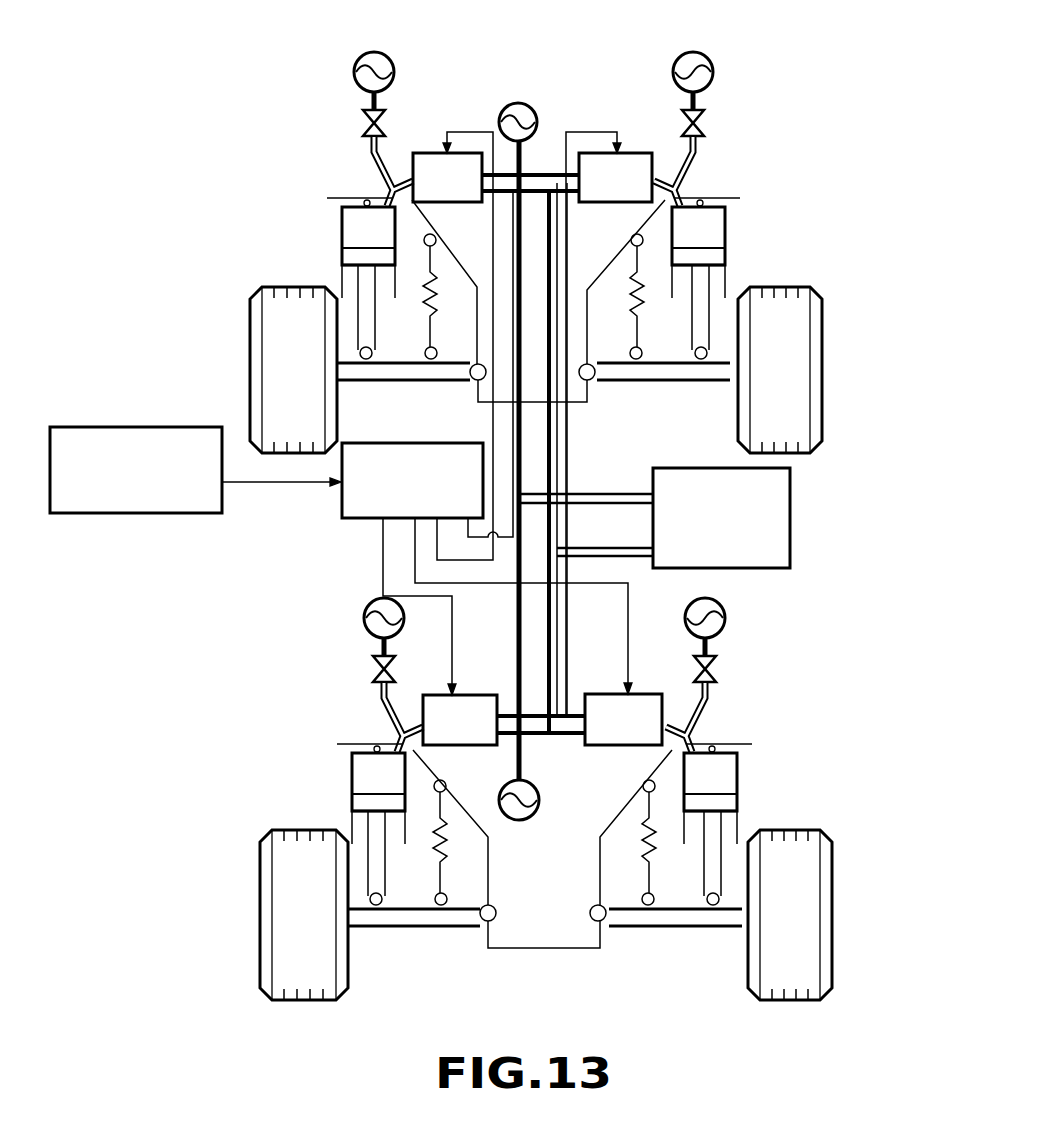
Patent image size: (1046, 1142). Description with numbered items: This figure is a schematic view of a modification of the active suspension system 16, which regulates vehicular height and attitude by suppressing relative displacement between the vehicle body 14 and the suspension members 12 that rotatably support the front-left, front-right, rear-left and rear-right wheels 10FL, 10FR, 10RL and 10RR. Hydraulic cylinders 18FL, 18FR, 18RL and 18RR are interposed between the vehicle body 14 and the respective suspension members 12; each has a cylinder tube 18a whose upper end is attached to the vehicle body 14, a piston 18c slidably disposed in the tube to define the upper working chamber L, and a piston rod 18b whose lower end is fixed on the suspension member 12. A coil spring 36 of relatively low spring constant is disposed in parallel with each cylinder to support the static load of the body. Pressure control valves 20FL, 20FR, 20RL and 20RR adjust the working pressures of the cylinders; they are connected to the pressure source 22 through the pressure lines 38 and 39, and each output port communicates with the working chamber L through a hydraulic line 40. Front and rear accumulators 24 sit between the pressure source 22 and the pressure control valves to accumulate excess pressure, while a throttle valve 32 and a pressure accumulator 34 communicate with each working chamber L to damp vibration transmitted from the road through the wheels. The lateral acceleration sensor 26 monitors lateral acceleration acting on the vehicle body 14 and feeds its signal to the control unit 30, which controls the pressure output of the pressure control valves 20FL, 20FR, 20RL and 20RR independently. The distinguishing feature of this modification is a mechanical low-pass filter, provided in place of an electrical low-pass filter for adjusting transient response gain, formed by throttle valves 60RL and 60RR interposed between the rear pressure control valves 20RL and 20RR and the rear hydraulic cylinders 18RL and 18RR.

The front-left wheel 10FL is at (266, 345).
The front-right wheel 10FR is at (805, 380).
The rear-left wheel 10RL is at (275, 905).
The rear-right wheel 10RR is at (815, 912).
The suspension member 12 is at (432, 376).
The vehicle body 14 is at (572, 403).
The active suspension system 16 is at (800, 556).
The front-left hydraulic cylinder 18FL is at (326, 222).
The front-right hydraulic cylinder 18FR is at (752, 231).
The rear-left hydraulic cylinder 18RL is at (332, 772).
The rear-right hydraulic cylinder 18RR is at (757, 767).
The cylinder tube 18a is at (352, 200).
The piston rod 18b is at (365, 330).
The piston 18c is at (345, 268).
The front-left pressure control valve 20FL is at (430, 150).
The front-right pressure control valve 20FR is at (628, 150).
The rear-left pressure control valve 20RL is at (475, 693).
The rear-right pressure control valve 20RR is at (605, 692).
The pressure source 22 is at (790, 510).
The accumulator 24 is at (515, 103).
The lateral acceleration sensor 26 is at (148, 426).
The control unit 30 is at (345, 520).
The throttle valve 32 is at (360, 120).
The pressure accumulator 34 is at (374, 52).
The coil spring 36 is at (423, 302).
The pressure line 38 is at (615, 494).
The pressure line 39 is at (616, 548).
The hydraulic line 40 is at (383, 183).
The rear-left throttle valve 60RL is at (392, 735).
The rear-right throttle valve 60RR is at (690, 735).
The working chamber L is at (385, 229).